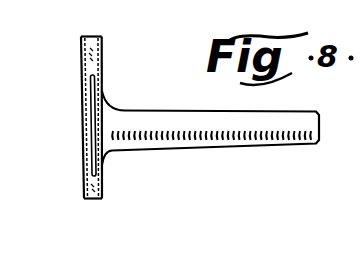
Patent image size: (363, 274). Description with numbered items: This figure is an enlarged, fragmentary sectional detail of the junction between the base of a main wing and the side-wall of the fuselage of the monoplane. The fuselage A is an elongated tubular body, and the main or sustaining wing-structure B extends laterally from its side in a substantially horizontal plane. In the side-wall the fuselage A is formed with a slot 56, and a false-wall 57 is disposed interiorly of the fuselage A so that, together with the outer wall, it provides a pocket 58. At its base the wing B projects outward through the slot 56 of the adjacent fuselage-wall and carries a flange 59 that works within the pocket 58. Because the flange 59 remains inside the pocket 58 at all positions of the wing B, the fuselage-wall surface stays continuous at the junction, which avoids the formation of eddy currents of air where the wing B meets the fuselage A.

The slot 56 is at (102, 98).
The false-wall 57 is at (82, 72).
The pocket 58 is at (89, 44).
The flange 59 is at (102, 73).
The fuselage A is at (102, 36).
The main wing-structure B is at (208, 145).